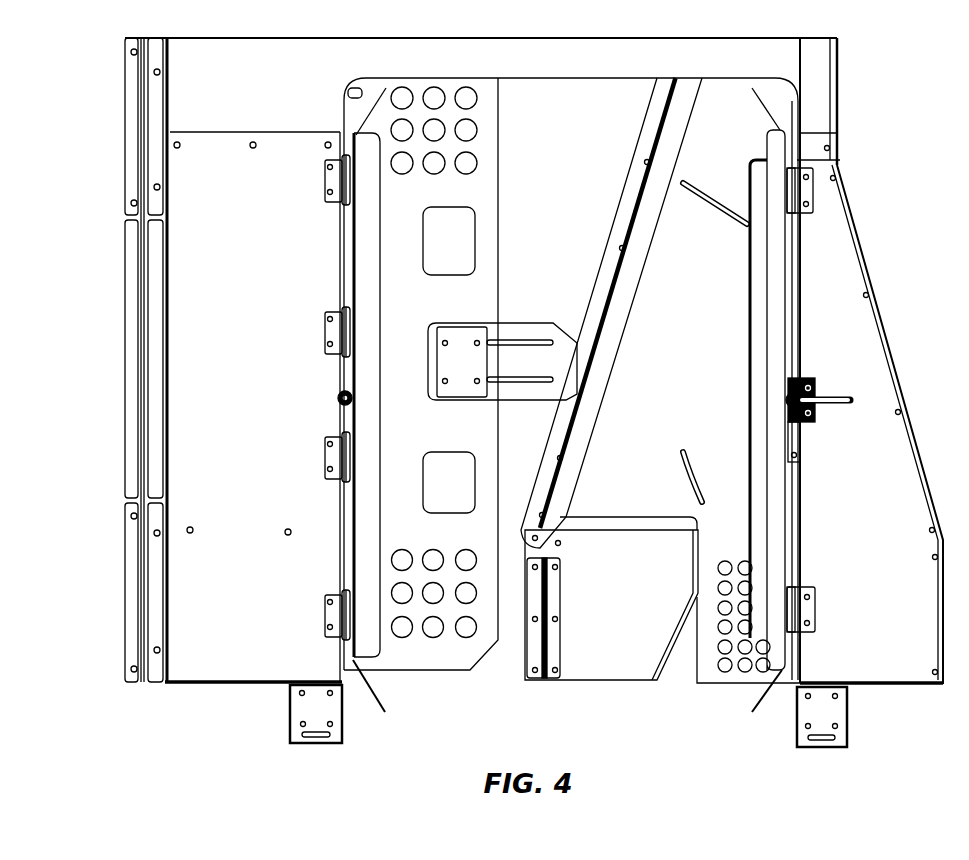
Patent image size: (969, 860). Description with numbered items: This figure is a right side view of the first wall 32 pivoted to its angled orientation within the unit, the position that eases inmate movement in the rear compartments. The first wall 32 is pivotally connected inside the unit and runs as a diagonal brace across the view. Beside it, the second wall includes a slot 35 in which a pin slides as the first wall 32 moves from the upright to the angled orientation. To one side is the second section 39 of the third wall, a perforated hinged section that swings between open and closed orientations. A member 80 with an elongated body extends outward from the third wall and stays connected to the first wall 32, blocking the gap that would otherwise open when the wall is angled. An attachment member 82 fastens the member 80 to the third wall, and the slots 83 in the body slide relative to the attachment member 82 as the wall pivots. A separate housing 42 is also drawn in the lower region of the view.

The first wall 32 is at (640, 178).
The slot 35 is at (690, 190).
The second section 39 is at (428, 306).
The housing box 42 is at (595, 596).
The member 80 is at (508, 332).
The attachment member 82 is at (443, 363).
The slot 83 is at (523, 383).